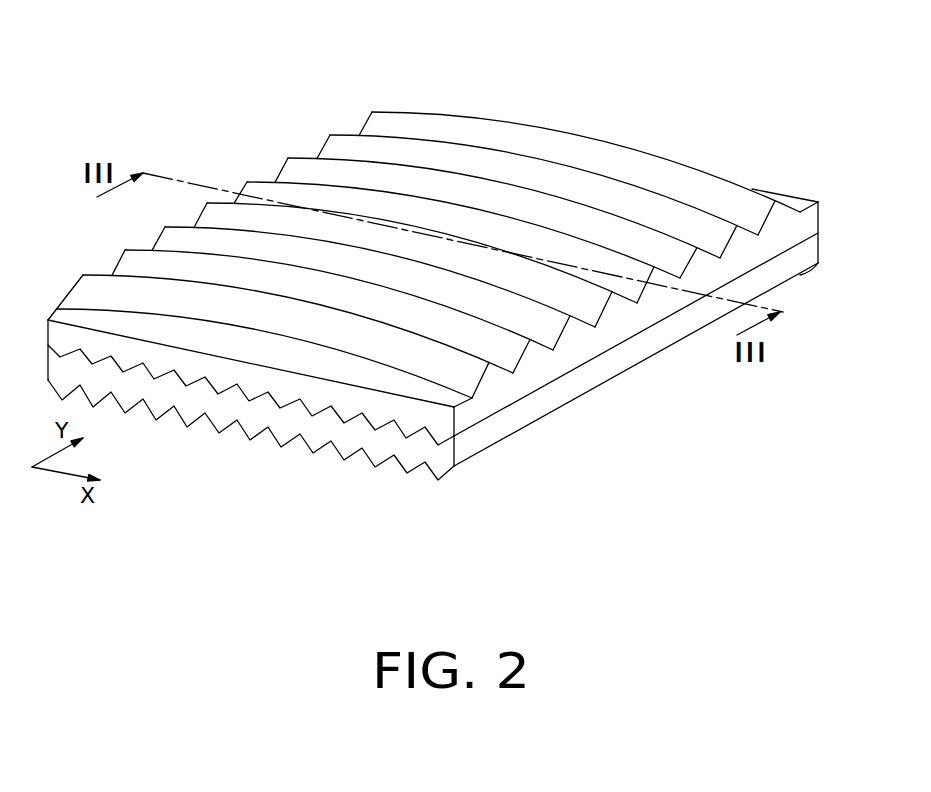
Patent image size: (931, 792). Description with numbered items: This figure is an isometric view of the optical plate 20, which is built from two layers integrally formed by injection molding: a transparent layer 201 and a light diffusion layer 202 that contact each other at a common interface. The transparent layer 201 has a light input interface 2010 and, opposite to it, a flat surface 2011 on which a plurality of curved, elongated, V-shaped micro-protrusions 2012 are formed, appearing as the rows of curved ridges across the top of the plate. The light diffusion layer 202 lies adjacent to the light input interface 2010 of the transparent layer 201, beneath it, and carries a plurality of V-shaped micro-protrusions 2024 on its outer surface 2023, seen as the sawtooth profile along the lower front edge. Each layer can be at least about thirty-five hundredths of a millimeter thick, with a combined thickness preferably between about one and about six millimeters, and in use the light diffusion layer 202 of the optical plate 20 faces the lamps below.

The optical plate 20 is at (437, 301).
The flat surface 2011 is at (437, 255).
The curved, elongated, V-shaped micro-protrusions 2012 is at (738, 232).
The transparent layer 201 is at (636, 384).
The light diffusion layer 202 is at (522, 415).
The light input interface 2010 is at (470, 434).
The outer surface 2023 is at (454, 470).
The V-shaped micro-protrusions 2024 is at (270, 462).